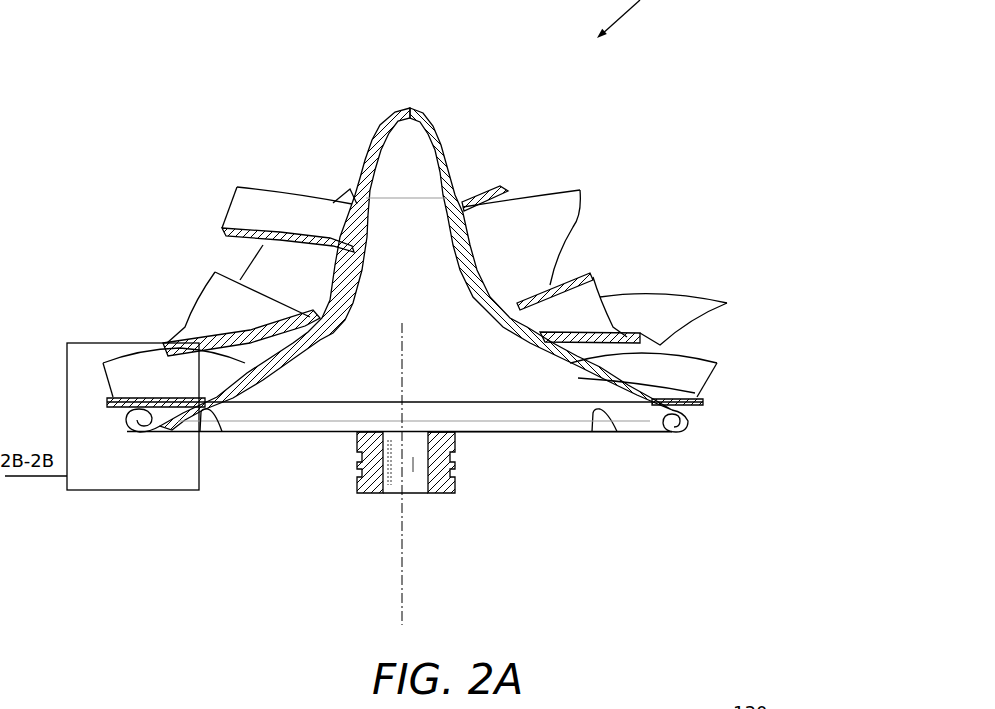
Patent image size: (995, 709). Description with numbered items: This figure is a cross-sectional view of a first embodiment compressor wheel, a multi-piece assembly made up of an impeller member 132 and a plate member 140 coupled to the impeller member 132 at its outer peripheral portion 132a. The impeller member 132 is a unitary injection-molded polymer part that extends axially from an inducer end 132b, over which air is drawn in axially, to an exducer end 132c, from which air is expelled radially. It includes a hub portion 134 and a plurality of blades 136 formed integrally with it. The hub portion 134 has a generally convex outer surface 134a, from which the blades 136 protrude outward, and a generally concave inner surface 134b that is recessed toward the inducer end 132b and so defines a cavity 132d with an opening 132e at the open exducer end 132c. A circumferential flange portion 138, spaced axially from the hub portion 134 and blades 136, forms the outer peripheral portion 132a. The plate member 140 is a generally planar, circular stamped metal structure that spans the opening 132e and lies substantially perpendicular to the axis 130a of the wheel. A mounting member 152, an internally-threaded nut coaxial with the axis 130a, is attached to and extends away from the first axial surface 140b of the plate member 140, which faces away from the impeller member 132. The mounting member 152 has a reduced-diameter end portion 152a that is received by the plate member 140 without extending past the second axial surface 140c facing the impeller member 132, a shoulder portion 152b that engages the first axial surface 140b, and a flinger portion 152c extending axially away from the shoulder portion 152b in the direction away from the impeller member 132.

The axis 130a is at (403, 577).
The impeller member 132 is at (415, 110).
The outer peripheral portion 132a is at (661, 430).
The inducer end 132b is at (336, 116).
The exducer end 132c is at (735, 403).
The cavity 132d is at (506, 393).
The opening 132e is at (325, 458).
The hub portion 134 is at (407, 244).
The outer surface 134a is at (466, 230).
The inner surface 134b is at (453, 229).
The blades 136 is at (642, 335).
The flange portion 138 is at (701, 456).
The plate member 140 is at (618, 440).
The first axial surface 140b is at (479, 432).
The second axial surface 140c is at (457, 432).
The mounting member 152 is at (419, 458).
The end portion 152a is at (381, 430).
The shoulder portion 152b is at (360, 432).
The flinger portion 152c is at (451, 474).